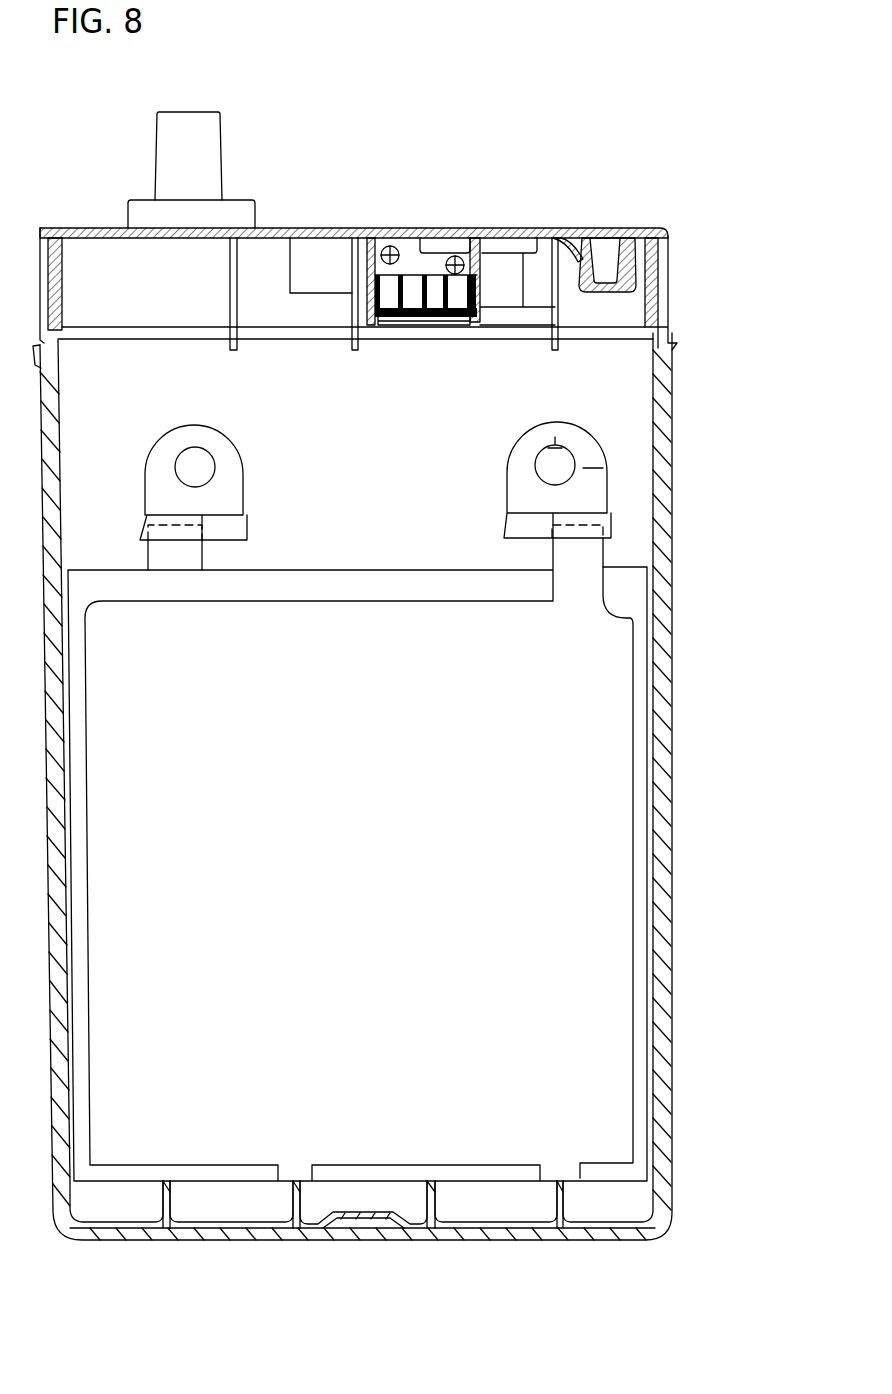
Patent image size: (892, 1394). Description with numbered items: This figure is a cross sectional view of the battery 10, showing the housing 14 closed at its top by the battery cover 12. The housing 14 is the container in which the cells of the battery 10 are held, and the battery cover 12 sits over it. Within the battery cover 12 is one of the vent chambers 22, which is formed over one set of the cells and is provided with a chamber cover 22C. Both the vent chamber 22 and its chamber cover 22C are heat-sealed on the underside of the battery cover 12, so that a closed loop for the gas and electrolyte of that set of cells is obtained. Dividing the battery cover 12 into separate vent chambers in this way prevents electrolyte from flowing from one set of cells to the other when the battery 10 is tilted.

The battery 10 is at (693, 400).
The battery cover 12 is at (77, 235).
The housing 14 is at (660, 553).
The vent chamber 22 is at (417, 267).
The chamber cover 22C is at (452, 270).